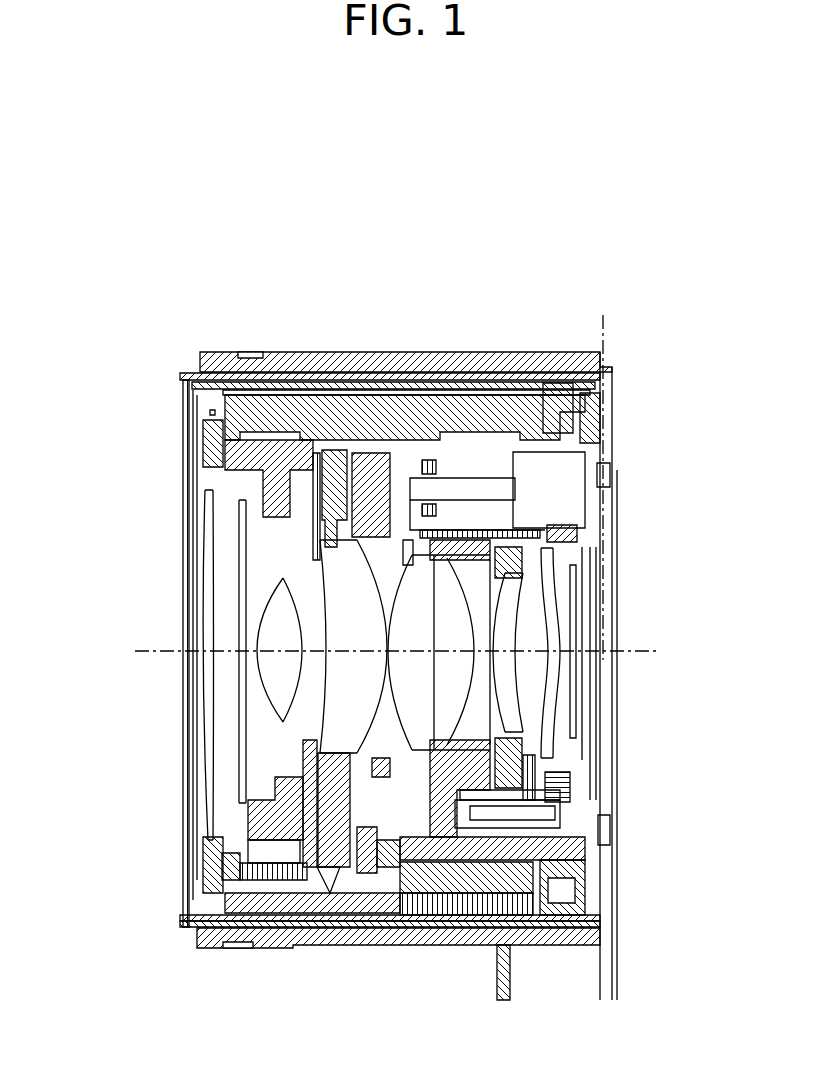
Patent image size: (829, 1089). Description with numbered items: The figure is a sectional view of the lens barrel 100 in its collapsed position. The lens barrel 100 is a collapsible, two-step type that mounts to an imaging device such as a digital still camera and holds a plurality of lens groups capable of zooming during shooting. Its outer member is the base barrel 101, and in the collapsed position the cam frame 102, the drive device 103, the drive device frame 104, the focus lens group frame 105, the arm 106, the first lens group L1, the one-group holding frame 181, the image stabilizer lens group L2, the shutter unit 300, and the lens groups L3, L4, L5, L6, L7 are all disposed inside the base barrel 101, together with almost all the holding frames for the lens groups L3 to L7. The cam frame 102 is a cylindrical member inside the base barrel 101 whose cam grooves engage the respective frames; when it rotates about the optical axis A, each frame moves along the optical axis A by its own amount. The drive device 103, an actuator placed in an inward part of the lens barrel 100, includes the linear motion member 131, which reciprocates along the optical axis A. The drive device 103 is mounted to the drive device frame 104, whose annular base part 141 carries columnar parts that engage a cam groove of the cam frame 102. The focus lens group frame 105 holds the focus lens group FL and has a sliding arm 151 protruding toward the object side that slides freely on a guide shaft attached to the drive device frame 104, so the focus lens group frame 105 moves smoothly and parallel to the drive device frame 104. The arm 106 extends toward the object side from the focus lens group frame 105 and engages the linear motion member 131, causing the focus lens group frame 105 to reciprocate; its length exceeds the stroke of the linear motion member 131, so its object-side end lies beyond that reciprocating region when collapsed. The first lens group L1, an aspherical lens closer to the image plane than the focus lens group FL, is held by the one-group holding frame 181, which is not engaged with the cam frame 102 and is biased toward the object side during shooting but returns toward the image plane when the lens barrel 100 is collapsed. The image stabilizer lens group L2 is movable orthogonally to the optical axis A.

The lens barrel 100 is at (520, 188).
The base barrel 101 is at (397, 349).
The cam frame 102 is at (275, 415).
The drive device 103 is at (568, 452).
The drive device frame 104 is at (545, 877).
The focus lens group frame 105 is at (535, 782).
The arm 106 is at (467, 530).
The linear motion member 131 is at (425, 467).
The base part 141 is at (520, 822).
The sliding arm 151 is at (498, 800).
The one-group holding frame 181 is at (585, 530).
The shutter unit 300 is at (330, 812).
The optical axis A is at (163, 650).
The first lens group L1 is at (550, 665).
The image stabilizer lens group L2 is at (505, 603).
The lens group L3 is at (455, 770).
The lens group L4 is at (352, 678).
The lens group L5 is at (300, 703).
The lens group L6 is at (262, 742).
The lens group L7 is at (222, 775).
The focus lens group FL is at (535, 708).